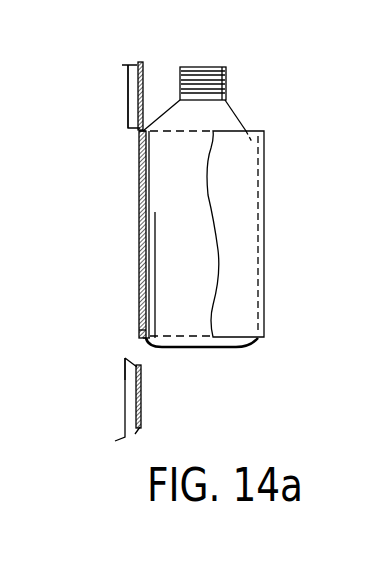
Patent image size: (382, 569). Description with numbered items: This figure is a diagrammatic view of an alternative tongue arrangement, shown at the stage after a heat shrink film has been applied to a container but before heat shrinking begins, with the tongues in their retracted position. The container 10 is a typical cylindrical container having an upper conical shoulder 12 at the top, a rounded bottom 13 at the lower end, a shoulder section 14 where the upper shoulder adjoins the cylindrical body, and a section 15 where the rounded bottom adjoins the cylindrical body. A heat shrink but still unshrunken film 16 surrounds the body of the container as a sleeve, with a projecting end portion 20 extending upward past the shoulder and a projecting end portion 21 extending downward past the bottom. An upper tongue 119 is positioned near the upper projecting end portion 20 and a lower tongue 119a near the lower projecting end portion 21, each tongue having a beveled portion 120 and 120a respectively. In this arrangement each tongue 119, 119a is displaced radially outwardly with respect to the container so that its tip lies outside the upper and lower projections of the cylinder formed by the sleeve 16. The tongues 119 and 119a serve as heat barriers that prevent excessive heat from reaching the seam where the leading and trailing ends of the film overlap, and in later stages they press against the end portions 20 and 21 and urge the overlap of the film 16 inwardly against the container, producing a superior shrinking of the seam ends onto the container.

The container 10 is at (126, 213).
The upper conical shoulder 12 is at (230, 113).
The rounded bottom 13 is at (168, 348).
The shoulder section 14 is at (150, 131).
The section of the rounded bottom 15 is at (147, 339).
The heat shrink film 16 is at (139, 248).
The projecting end portion 20 is at (141, 140).
The projecting end portion 21 is at (137, 336).
The tongue 119 is at (140, 63).
The tongue 119a is at (139, 403).
The beveled portion 120 is at (136, 129).
The beveled portion 120a is at (137, 360).